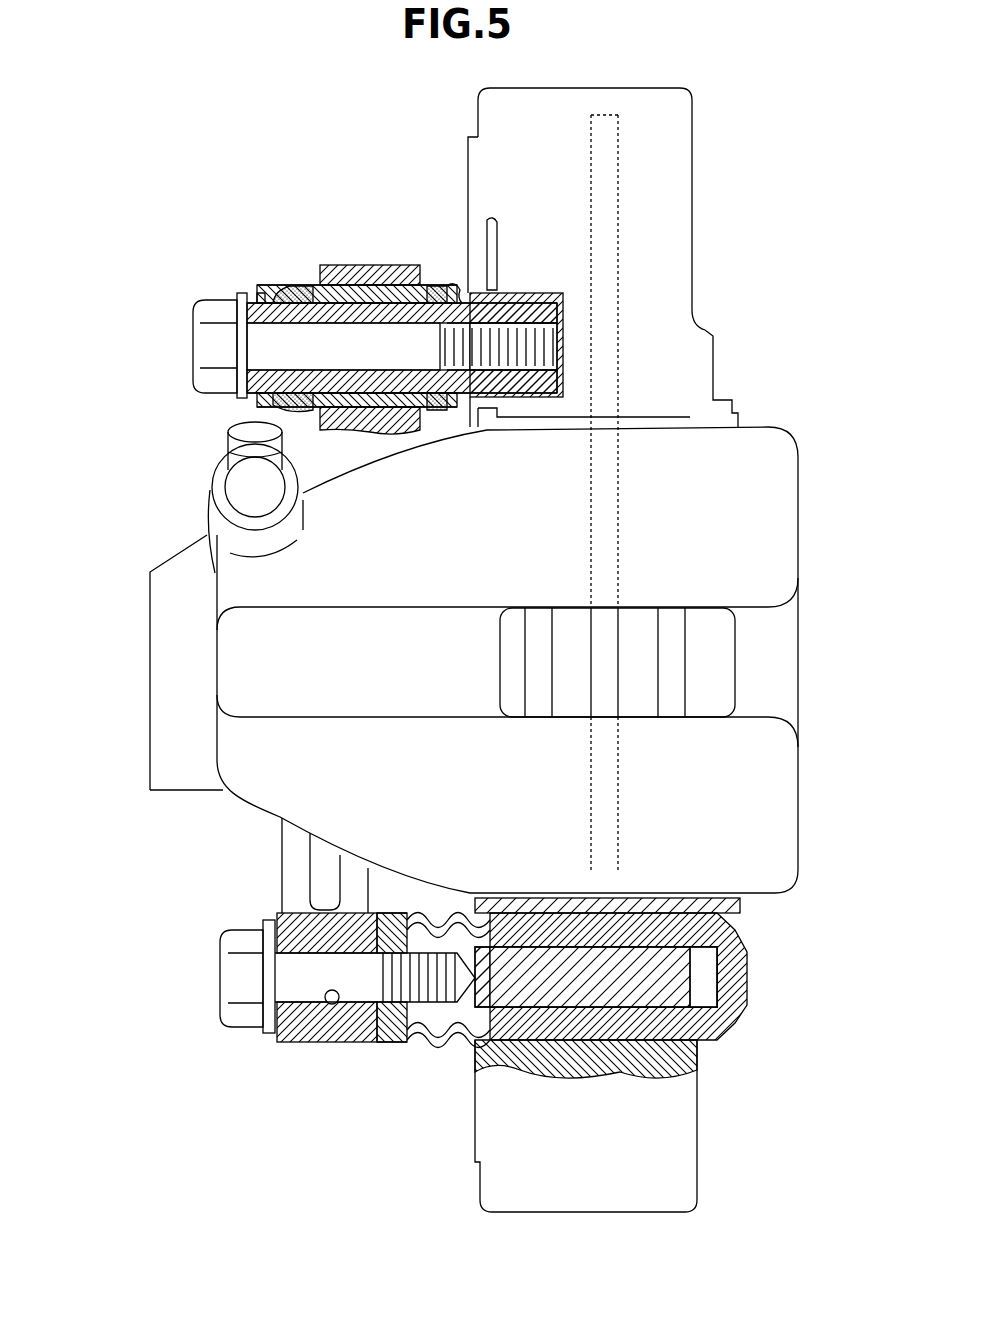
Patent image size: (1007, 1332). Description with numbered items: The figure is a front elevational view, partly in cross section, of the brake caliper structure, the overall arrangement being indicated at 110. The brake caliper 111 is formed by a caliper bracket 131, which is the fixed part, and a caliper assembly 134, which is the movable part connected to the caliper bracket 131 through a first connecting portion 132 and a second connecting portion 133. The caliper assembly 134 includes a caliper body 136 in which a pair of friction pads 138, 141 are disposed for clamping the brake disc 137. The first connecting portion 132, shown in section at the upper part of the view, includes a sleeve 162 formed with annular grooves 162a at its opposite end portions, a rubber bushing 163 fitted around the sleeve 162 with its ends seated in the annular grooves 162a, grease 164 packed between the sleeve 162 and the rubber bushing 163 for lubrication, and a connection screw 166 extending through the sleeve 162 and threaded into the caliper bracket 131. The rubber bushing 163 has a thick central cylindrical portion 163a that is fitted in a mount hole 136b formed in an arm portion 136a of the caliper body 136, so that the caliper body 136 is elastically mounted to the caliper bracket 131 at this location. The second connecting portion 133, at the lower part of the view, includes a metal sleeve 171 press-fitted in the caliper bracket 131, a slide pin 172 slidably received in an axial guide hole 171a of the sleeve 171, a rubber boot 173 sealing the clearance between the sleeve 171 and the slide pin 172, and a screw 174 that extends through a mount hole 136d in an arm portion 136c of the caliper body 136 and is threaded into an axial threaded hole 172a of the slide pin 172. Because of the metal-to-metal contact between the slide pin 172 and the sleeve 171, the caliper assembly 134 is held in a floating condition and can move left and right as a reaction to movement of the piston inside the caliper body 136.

The brake caliper 110 is at (757, 112).
The brake caliper 111 is at (140, 178).
The caliper bracket 131 is at (676, 178).
The first connecting portion 132 is at (268, 286).
The second connecting portion 133 is at (393, 1044).
The caliper assembly 134 is at (173, 548).
The caliper body 136 is at (247, 663).
The arm portion 136a is at (273, 488).
The mount hole 136b is at (333, 265).
The arm portion 136c is at (292, 845).
The mount hole 136d is at (330, 1004).
The brake disc 137 is at (620, 267).
The friction pad 138 is at (643, 660).
The friction pad 141 is at (567, 705).
The sleeve 162 is at (293, 320).
The annular groove 162a is at (262, 298).
The rubber bushing 163 is at (307, 277).
The thick central cylindrical portion 163a is at (367, 293).
The grease 164 is at (290, 277).
The connection screw 166 is at (213, 350).
The metal sleeve 171 is at (738, 983).
The axial guide hole 171a is at (663, 1000).
The slide pin 172 is at (675, 1053).
The axial threaded hole 172a is at (413, 960).
The rubber boot 173 is at (433, 1043).
The screw 174 is at (240, 975).